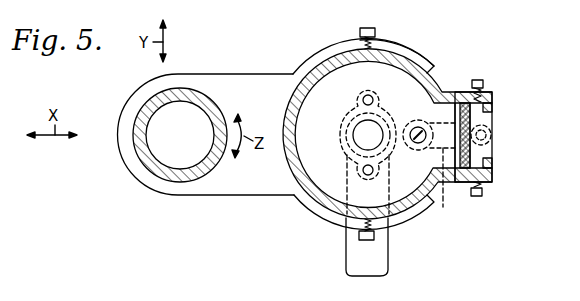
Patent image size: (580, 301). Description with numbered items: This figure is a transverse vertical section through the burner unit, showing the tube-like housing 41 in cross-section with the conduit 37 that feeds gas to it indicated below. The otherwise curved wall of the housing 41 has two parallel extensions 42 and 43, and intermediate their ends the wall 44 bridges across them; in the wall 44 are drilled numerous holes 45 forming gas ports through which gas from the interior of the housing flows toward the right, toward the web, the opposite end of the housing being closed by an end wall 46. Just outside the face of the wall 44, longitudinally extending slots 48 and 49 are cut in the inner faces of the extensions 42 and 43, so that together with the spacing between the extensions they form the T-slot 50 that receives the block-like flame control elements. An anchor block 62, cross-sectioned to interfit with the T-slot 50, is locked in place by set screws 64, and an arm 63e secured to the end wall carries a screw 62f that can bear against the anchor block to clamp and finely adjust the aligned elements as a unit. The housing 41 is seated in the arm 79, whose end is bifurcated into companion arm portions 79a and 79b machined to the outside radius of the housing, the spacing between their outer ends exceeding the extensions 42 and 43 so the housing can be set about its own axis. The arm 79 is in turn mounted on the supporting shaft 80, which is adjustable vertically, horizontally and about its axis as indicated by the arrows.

The conduit 37 is at (377, 257).
The tube-like housing 41 is at (312, 65).
The wall extension 42 is at (458, 92).
The wall extension 43 is at (462, 182).
The bridging wall 44 is at (455, 100).
The holes 45 is at (493, 110).
The end wall 46 is at (323, 168).
The slot 48 is at (495, 95).
The slot 49 is at (494, 170).
The T-slot 50 is at (492, 152).
The anchor block 62 is at (492, 138).
The screw 62f is at (492, 126).
The arm 63e is at (446, 191).
The set screws 64 is at (483, 82).
The arm 79 is at (243, 69).
The arm portion 79a is at (413, 53).
The arm portion 79b is at (413, 217).
The shaft 80 is at (143, 137).